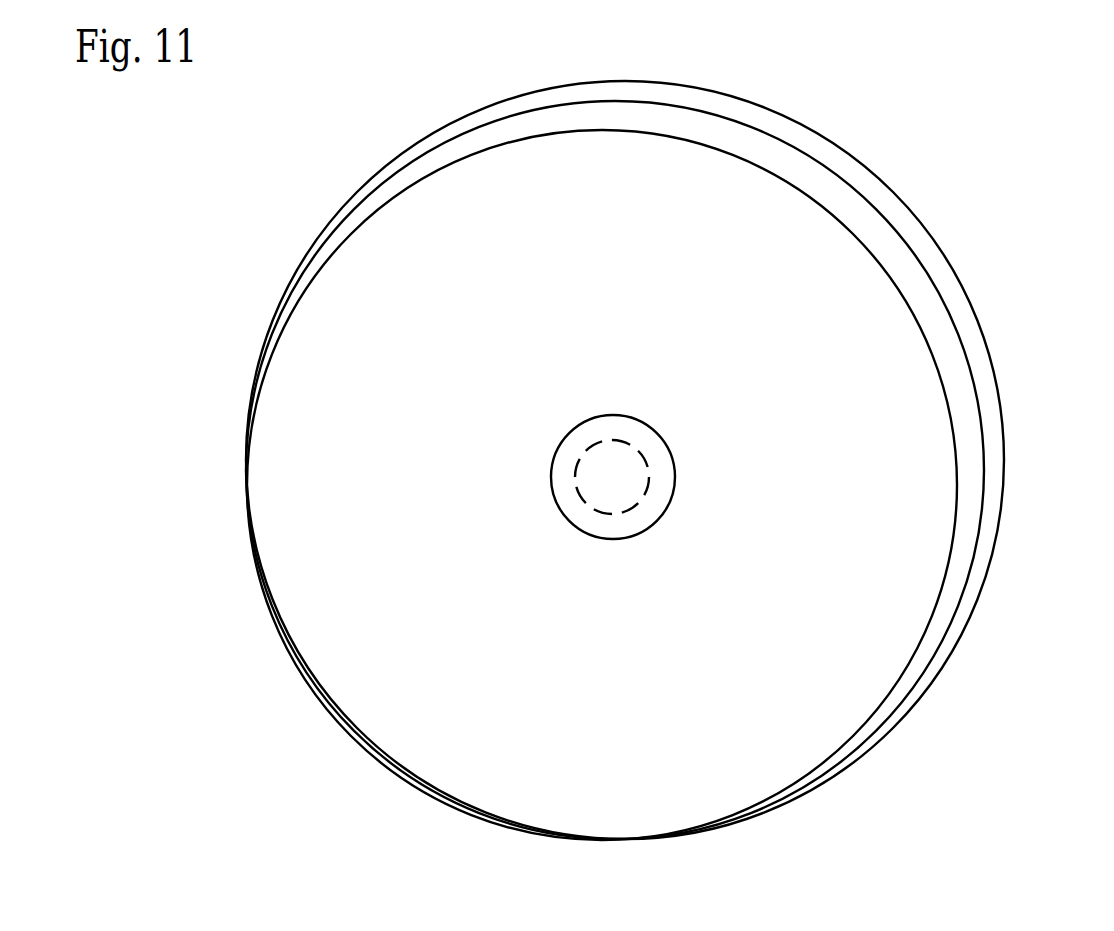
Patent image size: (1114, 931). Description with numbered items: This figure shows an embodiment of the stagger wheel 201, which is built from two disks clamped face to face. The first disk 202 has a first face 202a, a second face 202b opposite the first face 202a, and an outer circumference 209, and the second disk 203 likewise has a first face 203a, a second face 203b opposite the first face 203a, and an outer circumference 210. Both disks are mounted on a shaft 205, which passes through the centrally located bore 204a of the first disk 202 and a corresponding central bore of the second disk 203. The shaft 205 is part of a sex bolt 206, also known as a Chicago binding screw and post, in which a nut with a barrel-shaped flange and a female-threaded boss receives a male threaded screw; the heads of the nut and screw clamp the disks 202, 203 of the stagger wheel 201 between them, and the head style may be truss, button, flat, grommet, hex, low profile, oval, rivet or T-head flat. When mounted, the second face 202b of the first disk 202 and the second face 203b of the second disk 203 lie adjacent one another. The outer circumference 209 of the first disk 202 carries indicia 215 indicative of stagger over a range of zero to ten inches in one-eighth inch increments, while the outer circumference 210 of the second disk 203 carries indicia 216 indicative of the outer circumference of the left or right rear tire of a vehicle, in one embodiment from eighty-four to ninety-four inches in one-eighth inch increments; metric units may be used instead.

The stagger wheel 201 is at (267, 170).
The first disk 202 is at (335, 330).
The first face 202a is at (294, 382).
The second face 202b is at (743, 127).
The second disk 203 is at (933, 257).
The first face 203a is at (908, 210).
The second face 203b is at (770, 138).
The centrally located bore 204a is at (598, 440).
The shaft 205 is at (613, 488).
The sex bolt 206 is at (670, 452).
The outer circumference 209 is at (450, 173).
The outer circumference 210 is at (825, 140).
The indicia 215 is at (528, 132).
The indicia 216 is at (858, 180).